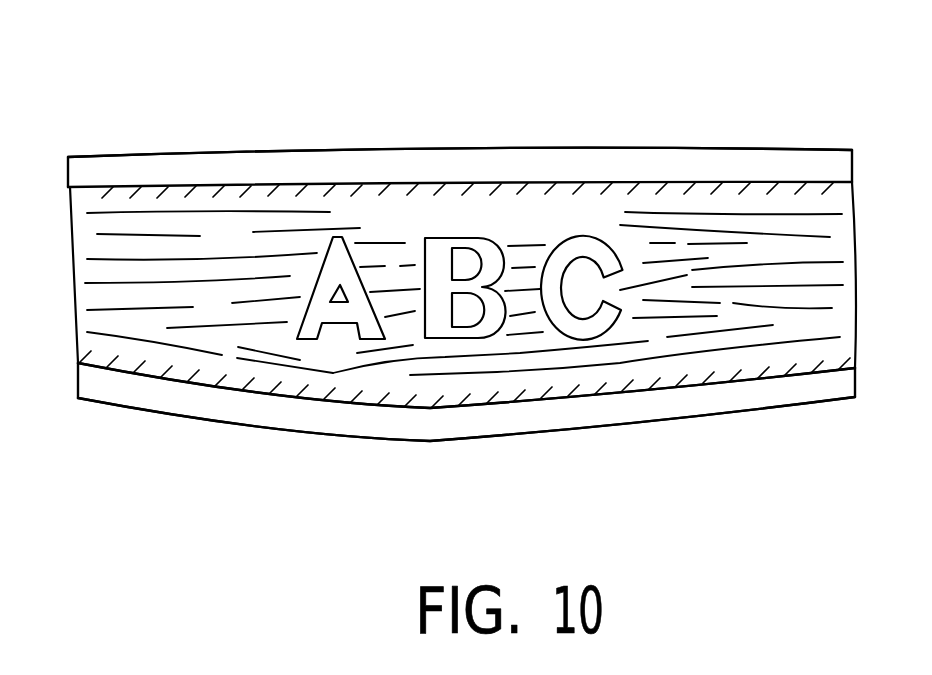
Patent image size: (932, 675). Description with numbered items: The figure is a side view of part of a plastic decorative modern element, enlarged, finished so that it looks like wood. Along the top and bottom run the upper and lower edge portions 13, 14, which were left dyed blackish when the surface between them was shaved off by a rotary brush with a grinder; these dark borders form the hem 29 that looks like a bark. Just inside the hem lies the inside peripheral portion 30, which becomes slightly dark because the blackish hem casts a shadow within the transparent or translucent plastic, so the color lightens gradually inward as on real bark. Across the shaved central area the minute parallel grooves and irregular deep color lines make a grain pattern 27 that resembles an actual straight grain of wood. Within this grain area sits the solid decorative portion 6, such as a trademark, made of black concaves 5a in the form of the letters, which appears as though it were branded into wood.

The solid decorative portion 6 is at (302, 288).
The inside peripheral portion 30 is at (385, 186).
The upper edge portion 13 is at (584, 148).
The hem 29 is at (710, 149).
The black concaves 5a is at (303, 340).
The lower edge portion 14 is at (470, 439).
The grain pattern 27 is at (663, 343).